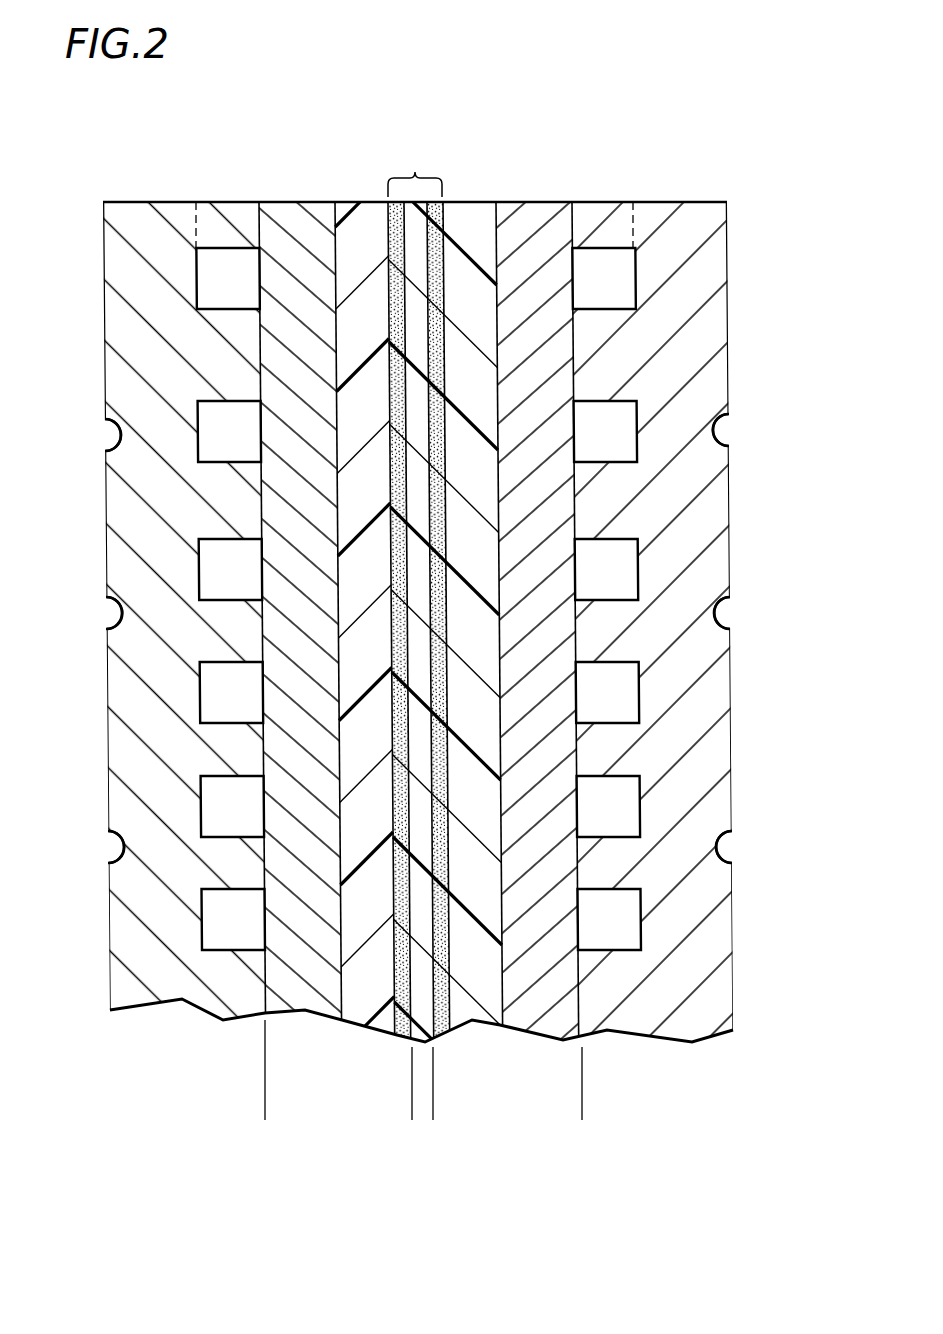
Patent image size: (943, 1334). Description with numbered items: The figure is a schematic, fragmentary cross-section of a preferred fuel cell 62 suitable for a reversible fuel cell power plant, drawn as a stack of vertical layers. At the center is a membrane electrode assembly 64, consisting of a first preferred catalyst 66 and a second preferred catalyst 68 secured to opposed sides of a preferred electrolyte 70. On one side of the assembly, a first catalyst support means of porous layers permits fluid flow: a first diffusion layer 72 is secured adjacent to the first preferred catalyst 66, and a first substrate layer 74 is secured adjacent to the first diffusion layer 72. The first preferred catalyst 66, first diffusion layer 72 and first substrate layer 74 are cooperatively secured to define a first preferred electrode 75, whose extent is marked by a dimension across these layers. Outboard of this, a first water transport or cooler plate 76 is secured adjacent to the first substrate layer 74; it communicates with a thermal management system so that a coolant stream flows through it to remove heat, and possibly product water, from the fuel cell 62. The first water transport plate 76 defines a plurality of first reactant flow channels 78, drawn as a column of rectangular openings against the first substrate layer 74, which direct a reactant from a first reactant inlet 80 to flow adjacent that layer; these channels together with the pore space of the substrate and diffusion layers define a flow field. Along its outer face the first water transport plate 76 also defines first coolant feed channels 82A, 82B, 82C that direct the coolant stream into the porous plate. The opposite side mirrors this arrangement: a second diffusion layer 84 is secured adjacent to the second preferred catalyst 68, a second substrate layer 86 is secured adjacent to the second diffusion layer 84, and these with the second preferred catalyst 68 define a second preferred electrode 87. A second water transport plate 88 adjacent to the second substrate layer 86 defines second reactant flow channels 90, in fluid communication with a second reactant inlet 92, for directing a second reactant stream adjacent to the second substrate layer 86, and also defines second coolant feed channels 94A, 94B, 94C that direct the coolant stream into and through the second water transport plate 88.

The fuel cell 62 is at (700, 78).
The membrane electrode assembly 64 is at (415, 171).
The first preferred catalyst 66 is at (397, 1037).
The second preferred catalyst 68 is at (447, 1028).
The electrolyte 70 is at (425, 1043).
The first diffusion layer 72 is at (363, 1008).
The first substrate layer 74 is at (322, 982).
The first preferred electrode 75 is at (265, 1103).
The first water transport plate 76 is at (207, 995).
The first reactant flow channels 78 is at (223, 425).
The first reactant inlet 80 is at (222, 235).
The first coolant feed channel 82A is at (112, 433).
The first coolant feed channel 82B is at (112, 613).
The first coolant feed channel 82C is at (114, 846).
The second diffusion layer 84 is at (475, 1010).
The second substrate layer 86 is at (528, 1010).
The second preferred electrode 87 is at (433, 1102).
The second water transport plate 88 is at (652, 1018).
The second reactant flow channels 90 is at (611, 420).
The second reactant inlet 92 is at (607, 232).
The second coolant feed channel 94A is at (718, 431).
The second coolant feed channel 94B is at (718, 614).
The second coolant feed channel 94C is at (720, 847).